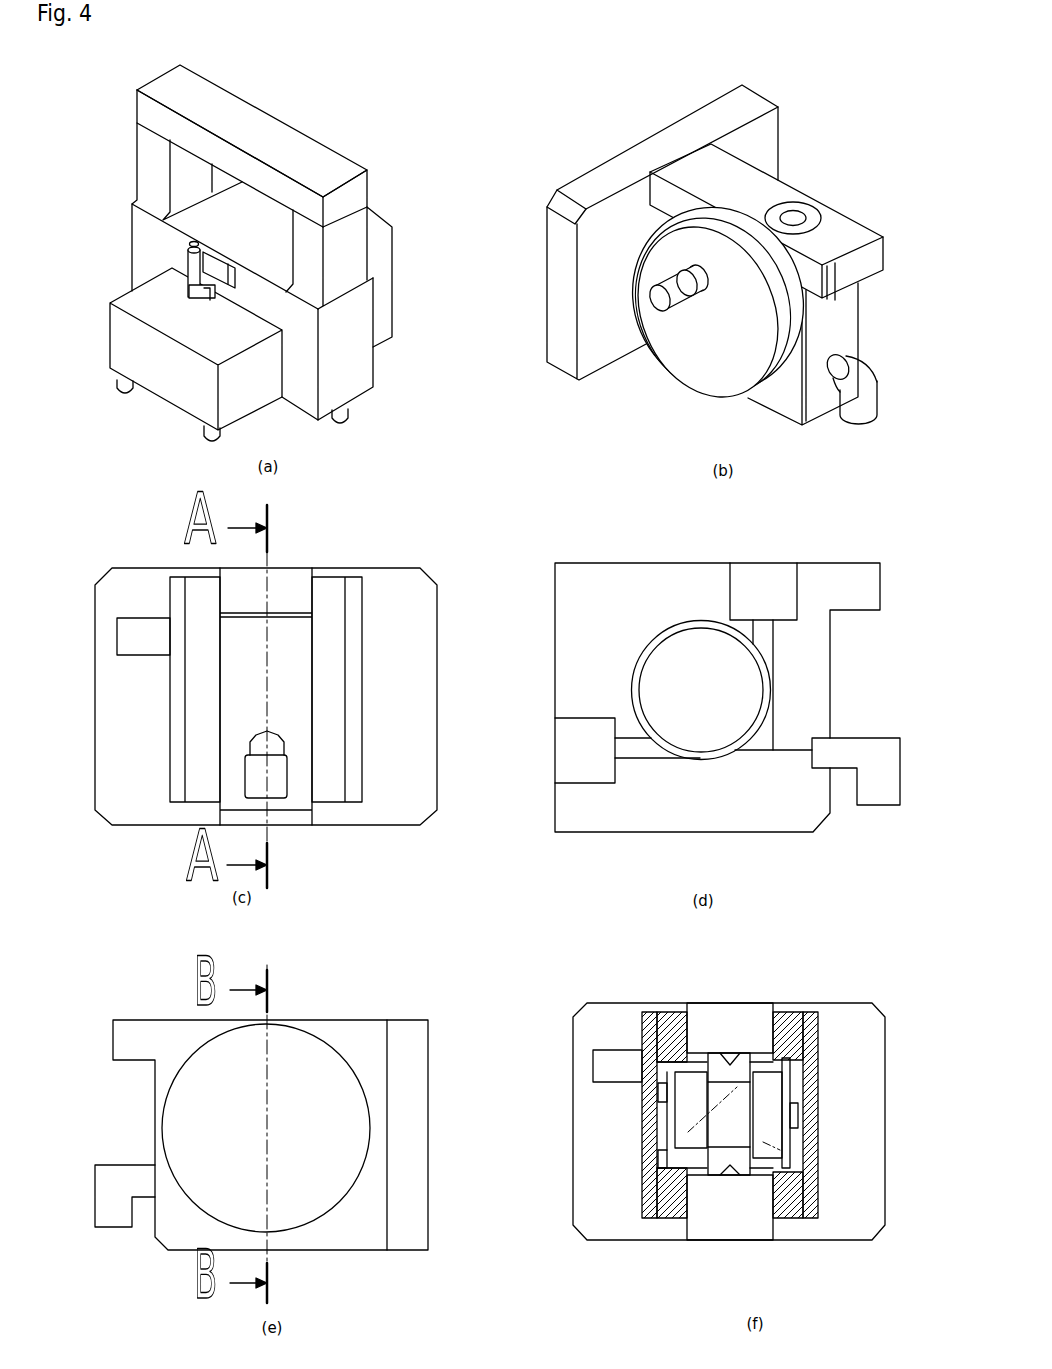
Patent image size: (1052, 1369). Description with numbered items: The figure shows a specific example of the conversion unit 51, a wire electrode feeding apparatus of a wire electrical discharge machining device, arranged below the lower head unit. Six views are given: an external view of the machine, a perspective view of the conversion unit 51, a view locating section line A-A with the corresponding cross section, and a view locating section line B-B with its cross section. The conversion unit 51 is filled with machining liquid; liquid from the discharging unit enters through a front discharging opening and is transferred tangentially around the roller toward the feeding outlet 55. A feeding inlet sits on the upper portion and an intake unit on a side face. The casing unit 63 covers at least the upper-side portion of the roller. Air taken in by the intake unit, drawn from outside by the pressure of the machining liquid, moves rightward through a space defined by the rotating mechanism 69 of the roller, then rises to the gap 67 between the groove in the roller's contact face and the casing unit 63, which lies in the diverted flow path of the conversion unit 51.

The conversion unit 51 is at (190, 297).
The feeding outlet 55 is at (594, 782).
The casing unit 63 is at (730, 1000).
The gap 67 is at (725, 1052).
The rotating mechanism 69 is at (683, 1090).